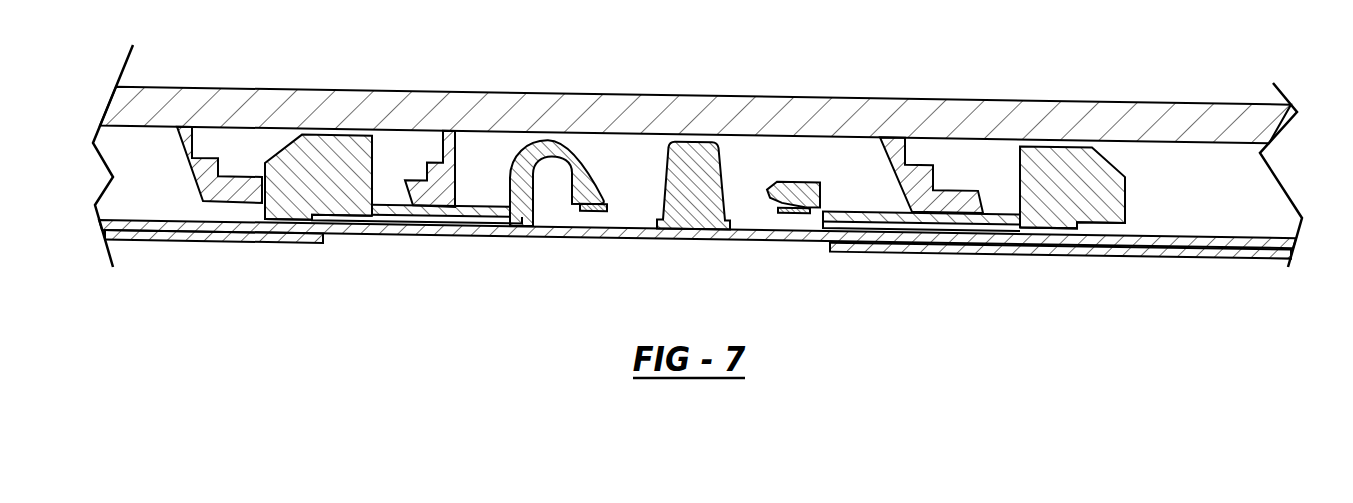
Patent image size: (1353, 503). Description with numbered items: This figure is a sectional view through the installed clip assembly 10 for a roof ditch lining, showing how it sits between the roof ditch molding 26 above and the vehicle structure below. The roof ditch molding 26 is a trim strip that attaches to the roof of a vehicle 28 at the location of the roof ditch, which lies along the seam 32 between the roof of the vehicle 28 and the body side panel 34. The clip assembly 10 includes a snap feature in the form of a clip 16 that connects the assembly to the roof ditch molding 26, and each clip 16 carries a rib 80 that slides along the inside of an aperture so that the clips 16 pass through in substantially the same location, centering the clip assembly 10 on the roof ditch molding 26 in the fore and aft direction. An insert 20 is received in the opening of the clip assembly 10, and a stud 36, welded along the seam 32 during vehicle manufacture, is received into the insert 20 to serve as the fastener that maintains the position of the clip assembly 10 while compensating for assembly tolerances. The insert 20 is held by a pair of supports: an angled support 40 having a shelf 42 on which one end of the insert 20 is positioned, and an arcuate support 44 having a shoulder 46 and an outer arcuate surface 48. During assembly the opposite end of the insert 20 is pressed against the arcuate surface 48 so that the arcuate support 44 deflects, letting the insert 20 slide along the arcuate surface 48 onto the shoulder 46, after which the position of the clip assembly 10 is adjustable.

The clip assembly 10 is at (697, 184).
The clip 16 is at (340, 165).
The insert 20 is at (800, 212).
The roof ditch molding 26 is at (1045, 120).
The roof of a vehicle 28 is at (1205, 237).
The seam 32 is at (337, 240).
The body side panel 34 is at (1170, 258).
The stud 36 is at (698, 152).
The angled support 40 is at (797, 190).
The shelf 42 is at (805, 211).
The arcuate support 44 is at (573, 160).
The shoulder 46 is at (597, 212).
The outer arcuate surface 48 is at (527, 150).
The rib 80 is at (286, 200).